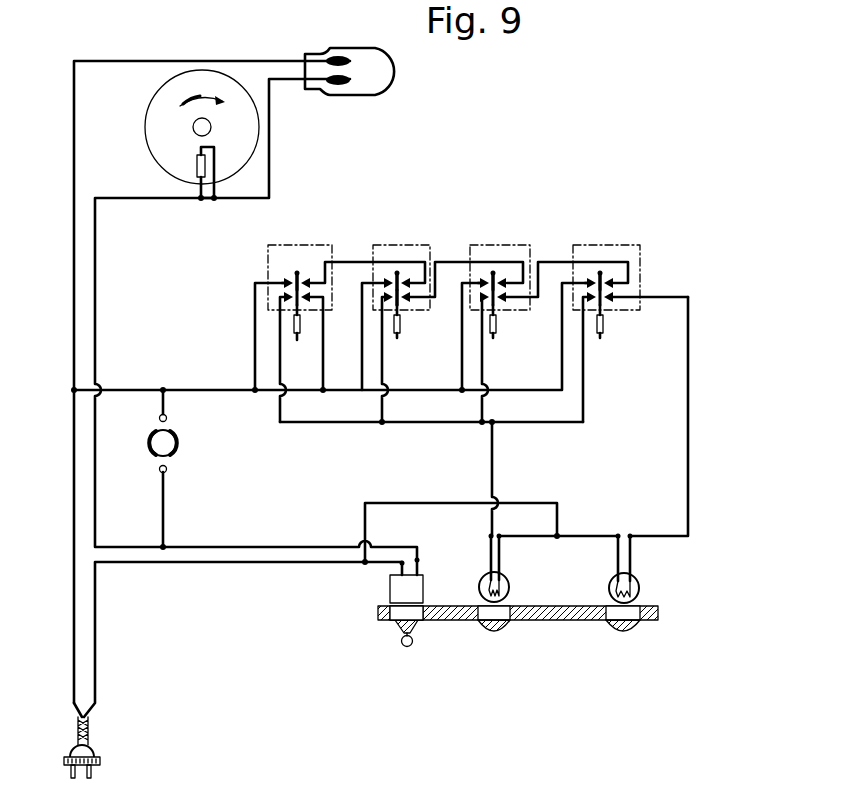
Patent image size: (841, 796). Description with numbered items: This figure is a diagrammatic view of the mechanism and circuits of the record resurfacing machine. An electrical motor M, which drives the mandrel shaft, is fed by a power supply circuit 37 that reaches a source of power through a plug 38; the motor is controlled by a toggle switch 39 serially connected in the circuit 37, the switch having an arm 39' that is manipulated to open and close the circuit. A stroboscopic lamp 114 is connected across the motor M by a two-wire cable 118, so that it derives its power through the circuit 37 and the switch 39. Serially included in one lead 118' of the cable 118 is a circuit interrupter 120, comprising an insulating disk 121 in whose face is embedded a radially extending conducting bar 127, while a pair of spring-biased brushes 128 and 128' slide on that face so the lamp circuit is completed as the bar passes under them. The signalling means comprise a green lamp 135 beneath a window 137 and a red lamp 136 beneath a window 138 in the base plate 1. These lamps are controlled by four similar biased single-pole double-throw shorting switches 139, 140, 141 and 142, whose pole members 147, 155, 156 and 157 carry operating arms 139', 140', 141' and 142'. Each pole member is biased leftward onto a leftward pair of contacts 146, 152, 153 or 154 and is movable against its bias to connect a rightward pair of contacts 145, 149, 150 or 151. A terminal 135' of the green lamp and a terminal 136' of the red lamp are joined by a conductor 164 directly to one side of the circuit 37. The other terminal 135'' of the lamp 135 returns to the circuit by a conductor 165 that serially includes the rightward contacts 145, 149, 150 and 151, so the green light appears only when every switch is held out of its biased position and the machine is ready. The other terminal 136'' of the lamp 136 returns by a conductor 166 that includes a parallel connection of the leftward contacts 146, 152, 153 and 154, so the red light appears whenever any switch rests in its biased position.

The support plate 1 is at (580, 619).
The power supply circuit 37 is at (95, 656).
The plug 38 is at (88, 750).
The switch 39 is at (396, 617).
The arm 39' is at (414, 654).
The stroboscopic lamp 114 is at (390, 84).
The two-wire cable 118 is at (245, 371).
The lead 118' is at (216, 214).
The circuit interrupter 120 is at (150, 153).
The disk 121 is at (145, 127).
The bar 127 is at (206, 164).
The brush 128 is at (180, 175).
The brush 128' is at (188, 166).
The lamp 135 is at (652, 588).
The terminal 135' is at (618, 538).
The terminal 135'' is at (652, 543).
The lamp 136 is at (516, 587).
The terminal 136' is at (516, 547).
The lamp lead 136'' is at (468, 549).
The window 137 is at (632, 628).
The window 138 is at (505, 628).
The switch 139 is at (619, 321).
The operating arm 139' is at (624, 322).
The switch 140 is at (514, 318).
The operating arm 140' is at (505, 333).
The switch 141 is at (416, 316).
The operating arm 141' is at (407, 331).
The switch 142 is at (309, 318).
The operating arm 142' is at (302, 337).
The pair of contact springs 145 is at (641, 298).
The pair of contact springs 146 is at (599, 285).
The pole member 147 is at (600, 272).
The rightward pair of contacts 149 is at (505, 298).
The rightward pair of contacts 150 is at (420, 298).
The rightward pair of contacts 151 is at (320, 298).
The leftward pair of contacts 152 is at (491, 284).
The leftward pair of contacts 153 is at (397, 272).
The leftward pair of contacts 154 is at (295, 286).
The pole member 155 is at (493, 272).
The pole member 156 is at (399, 276).
The pole member 157 is at (298, 272).
The conductor 164 is at (428, 503).
The conductor 165 is at (688, 425).
The conductor 166 is at (493, 480).
The electrical motor M is at (178, 452).